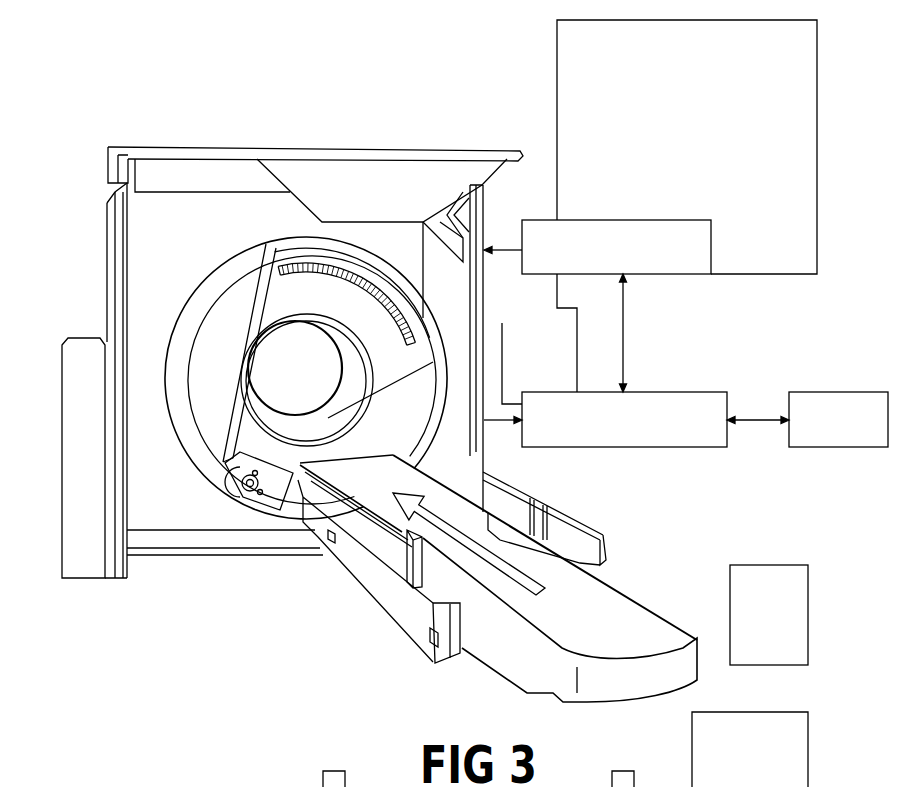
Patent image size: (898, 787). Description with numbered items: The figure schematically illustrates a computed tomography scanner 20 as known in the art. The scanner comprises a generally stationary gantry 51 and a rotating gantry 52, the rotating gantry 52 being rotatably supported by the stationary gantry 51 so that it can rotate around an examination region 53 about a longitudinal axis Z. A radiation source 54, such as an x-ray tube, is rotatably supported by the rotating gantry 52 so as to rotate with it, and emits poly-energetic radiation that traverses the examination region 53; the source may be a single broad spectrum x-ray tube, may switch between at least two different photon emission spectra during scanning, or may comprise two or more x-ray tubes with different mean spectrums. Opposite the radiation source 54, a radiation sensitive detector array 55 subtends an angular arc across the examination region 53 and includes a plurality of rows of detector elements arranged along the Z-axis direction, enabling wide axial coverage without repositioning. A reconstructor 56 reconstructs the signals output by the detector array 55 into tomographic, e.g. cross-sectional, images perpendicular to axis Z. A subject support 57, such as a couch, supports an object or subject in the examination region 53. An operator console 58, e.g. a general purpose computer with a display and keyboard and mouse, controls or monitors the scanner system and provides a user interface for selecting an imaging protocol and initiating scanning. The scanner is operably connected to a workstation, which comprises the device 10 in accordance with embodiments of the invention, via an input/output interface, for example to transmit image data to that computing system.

The computed tomography scanner 20 is at (114, 98).
The stationary gantry 51 is at (138, 285).
The rotating gantry 52 is at (282, 296).
The examination region 53 is at (306, 381).
The radiation source 54 is at (240, 500).
The radiation sensitive detector array 55 is at (410, 313).
The reconstructor 56 is at (627, 440).
The subject support 57 is at (640, 640).
The operator console 58 is at (618, 264).
The device 10 is at (852, 440).